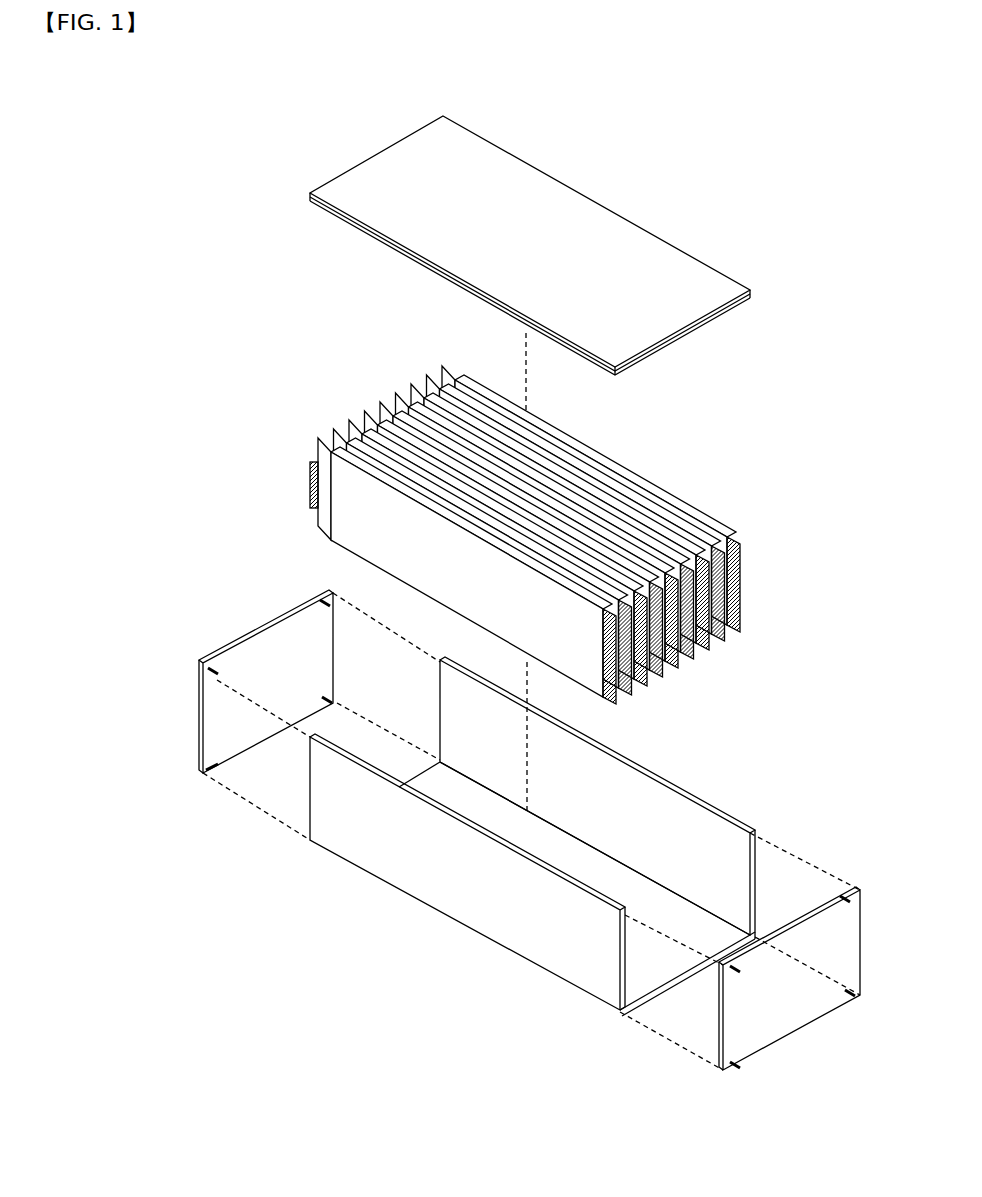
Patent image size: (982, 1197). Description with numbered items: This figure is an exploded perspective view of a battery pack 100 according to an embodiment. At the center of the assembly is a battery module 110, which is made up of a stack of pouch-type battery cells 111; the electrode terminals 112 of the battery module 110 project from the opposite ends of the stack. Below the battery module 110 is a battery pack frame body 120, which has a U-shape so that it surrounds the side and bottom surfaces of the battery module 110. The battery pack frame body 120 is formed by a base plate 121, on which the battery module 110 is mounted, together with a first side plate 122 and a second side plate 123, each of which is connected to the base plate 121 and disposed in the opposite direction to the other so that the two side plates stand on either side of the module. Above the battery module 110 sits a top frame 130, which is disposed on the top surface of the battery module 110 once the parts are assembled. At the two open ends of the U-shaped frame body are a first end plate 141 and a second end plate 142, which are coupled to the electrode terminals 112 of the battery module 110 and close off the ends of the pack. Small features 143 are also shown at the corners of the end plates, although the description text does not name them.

The battery pack 100 is at (198, 114).
The battery module 110 is at (530, 535).
The pouch-type battery cell 111 is at (345, 541).
The electrode terminal 112 is at (310, 484).
The battery pack frame body 120 is at (532, 904).
The base plate 121 is at (660, 967).
The first side plate 122 is at (583, 940).
The second side plate 123 is at (573, 793).
The top frame 130 is at (690, 273).
The first end plate 141 is at (783, 1027).
The second end plate 142 is at (248, 638).
The fastening hook 143 is at (200, 771).